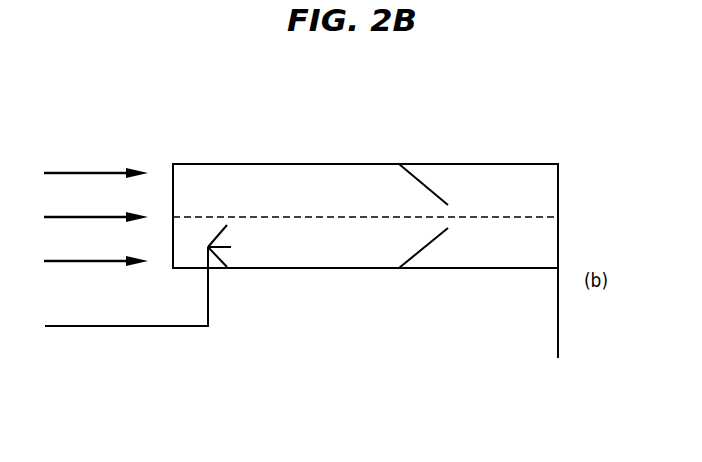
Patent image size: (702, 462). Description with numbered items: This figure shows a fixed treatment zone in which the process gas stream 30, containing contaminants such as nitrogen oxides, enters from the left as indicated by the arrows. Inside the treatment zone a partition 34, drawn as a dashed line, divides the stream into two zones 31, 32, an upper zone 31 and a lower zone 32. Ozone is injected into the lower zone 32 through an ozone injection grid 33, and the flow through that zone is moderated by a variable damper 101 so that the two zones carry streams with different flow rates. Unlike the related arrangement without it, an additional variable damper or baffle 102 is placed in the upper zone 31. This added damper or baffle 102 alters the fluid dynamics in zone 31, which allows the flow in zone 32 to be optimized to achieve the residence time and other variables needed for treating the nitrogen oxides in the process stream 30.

The process gas stream 30 is at (81, 217).
The zone 31 is at (259, 183).
The zone 32 is at (338, 252).
The ozone injection grid 33 is at (231, 247).
The partition 34 is at (365, 206).
The variable damper 101 is at (444, 244).
The variable damper or baffle 102 is at (444, 188).